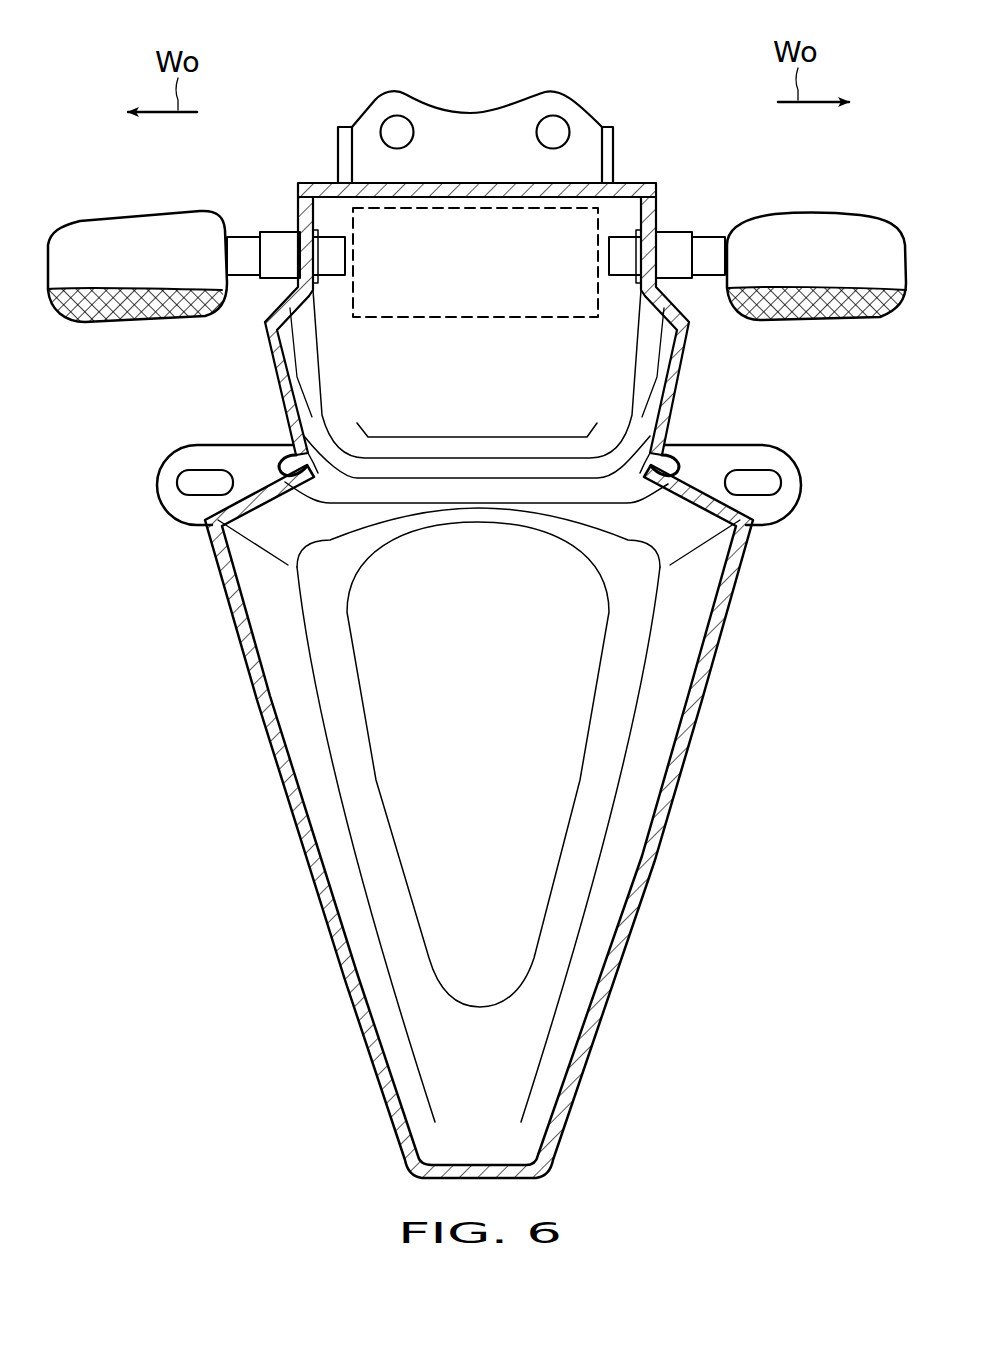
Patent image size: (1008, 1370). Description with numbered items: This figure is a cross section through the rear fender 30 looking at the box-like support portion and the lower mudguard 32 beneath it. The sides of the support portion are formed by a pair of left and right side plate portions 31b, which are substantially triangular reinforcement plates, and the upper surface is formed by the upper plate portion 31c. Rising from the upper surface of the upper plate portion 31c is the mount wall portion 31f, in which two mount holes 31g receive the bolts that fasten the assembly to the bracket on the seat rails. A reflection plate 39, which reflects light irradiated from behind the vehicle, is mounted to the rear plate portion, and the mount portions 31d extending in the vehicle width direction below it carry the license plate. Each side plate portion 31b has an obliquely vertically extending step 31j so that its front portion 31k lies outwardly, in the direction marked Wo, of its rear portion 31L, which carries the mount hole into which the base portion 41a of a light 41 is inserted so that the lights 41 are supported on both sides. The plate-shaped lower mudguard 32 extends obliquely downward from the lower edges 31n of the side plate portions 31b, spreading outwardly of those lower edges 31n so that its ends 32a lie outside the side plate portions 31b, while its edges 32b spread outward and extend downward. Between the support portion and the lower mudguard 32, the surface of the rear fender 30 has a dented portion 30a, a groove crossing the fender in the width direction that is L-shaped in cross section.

The rear fender 30 is at (668, 155).
The dented portion 30a is at (283, 465).
The side plate portion 31b is at (249, 343).
The upper plate portion 31c is at (433, 190).
The mount portion 31d is at (165, 472).
The mount wall portion 31f is at (488, 122).
The mount hole 31g is at (395, 135).
The step 31j is at (280, 307).
The front portion 31k is at (270, 365).
The rear portion 31L is at (293, 210).
The lower edge 31n is at (290, 430).
The lower mudguard 32 is at (638, 763).
The end 32a is at (177, 525).
The edge 32b is at (320, 895).
The reflection plate 39 is at (598, 220).
The light 41 is at (123, 220).
The base portion 41a is at (322, 278).